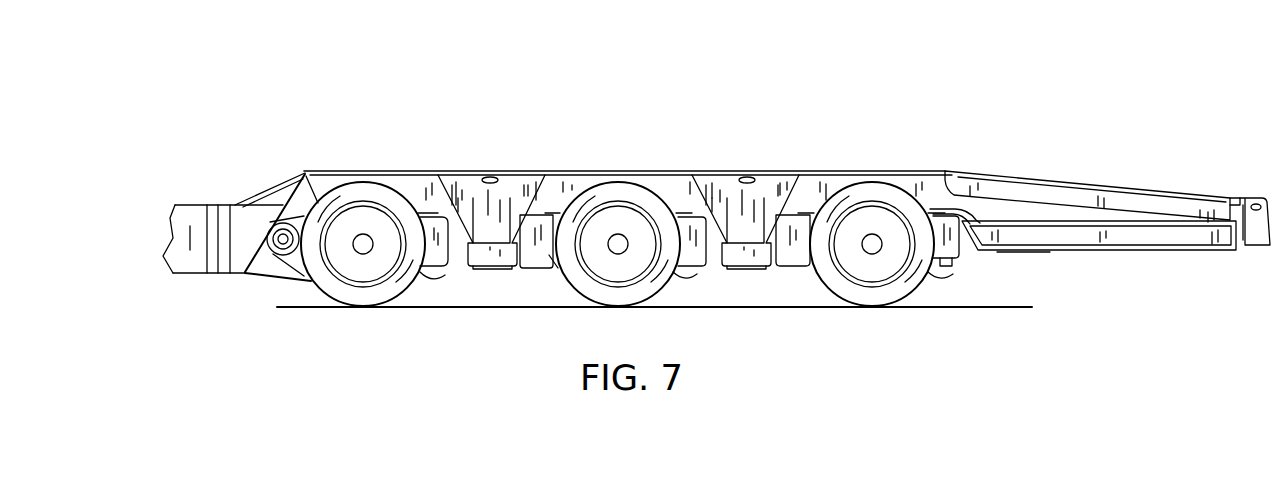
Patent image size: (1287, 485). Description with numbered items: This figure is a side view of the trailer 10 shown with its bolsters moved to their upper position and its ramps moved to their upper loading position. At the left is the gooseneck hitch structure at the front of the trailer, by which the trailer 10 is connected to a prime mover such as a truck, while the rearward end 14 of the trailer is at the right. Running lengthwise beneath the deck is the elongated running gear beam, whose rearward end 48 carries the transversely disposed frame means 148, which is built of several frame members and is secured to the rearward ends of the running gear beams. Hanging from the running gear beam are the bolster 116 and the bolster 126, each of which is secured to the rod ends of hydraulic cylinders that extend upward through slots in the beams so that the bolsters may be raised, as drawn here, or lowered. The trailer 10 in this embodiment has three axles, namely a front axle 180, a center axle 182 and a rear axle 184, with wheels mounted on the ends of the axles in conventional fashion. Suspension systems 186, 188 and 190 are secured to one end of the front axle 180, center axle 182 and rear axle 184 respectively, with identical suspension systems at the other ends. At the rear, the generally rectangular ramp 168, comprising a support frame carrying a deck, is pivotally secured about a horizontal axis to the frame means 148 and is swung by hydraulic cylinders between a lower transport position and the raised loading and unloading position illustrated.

The trailer 10 is at (777, 106).
The rearward end 14 is at (1277, 177).
The rearward end of running gear beam 48 is at (640, 169).
The bolster 116 is at (520, 173).
The bolster 126 is at (776, 171).
The frame means 148 is at (1249, 256).
The ramp 168 is at (1049, 190).
The front axle 180 is at (363, 249).
The center axle 182 is at (617, 249).
The rear axle 184 is at (872, 249).
The suspension system 186 is at (440, 274).
The suspension system 188 is at (694, 270).
The suspension system 190 is at (949, 264).